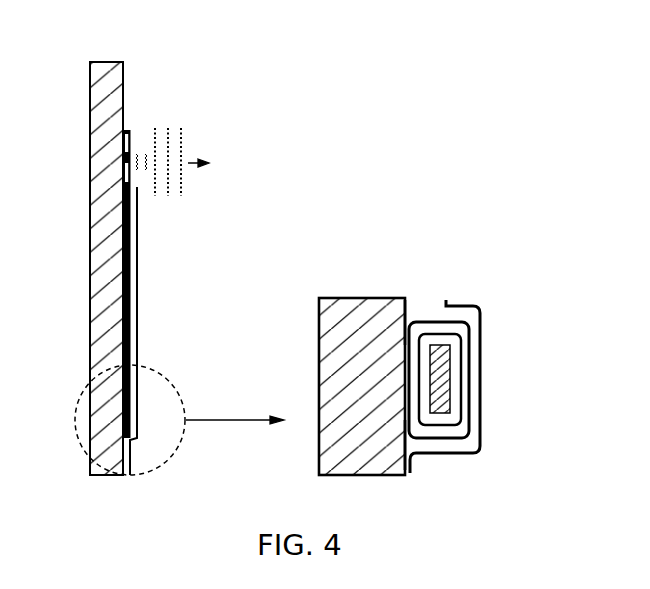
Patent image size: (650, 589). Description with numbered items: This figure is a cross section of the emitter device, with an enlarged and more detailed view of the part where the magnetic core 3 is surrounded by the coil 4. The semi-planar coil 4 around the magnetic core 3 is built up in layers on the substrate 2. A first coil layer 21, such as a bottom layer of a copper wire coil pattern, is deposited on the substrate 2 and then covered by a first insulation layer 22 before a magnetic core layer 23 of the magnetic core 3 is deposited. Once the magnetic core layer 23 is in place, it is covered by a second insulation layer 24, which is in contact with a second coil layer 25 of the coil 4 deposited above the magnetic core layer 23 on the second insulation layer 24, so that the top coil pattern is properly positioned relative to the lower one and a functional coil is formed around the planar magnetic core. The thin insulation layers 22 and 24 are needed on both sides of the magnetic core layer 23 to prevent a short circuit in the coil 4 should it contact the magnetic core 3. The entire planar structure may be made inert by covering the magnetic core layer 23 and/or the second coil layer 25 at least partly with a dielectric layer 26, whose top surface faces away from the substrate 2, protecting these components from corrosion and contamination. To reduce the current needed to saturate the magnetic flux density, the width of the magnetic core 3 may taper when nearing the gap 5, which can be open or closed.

The substrate 2 is at (102, 198).
The magnetic core 3 is at (129, 230).
The coil 4 is at (132, 430).
The gap 5 is at (122, 160).
The first coil layer 21 is at (403, 428).
The first insulation layer 22 is at (408, 342).
The magnetic core layer 23 is at (438, 382).
The second insulation layer 24 is at (462, 414).
The second coil layer 25 is at (465, 400).
The dielectric layer 26 is at (138, 270).